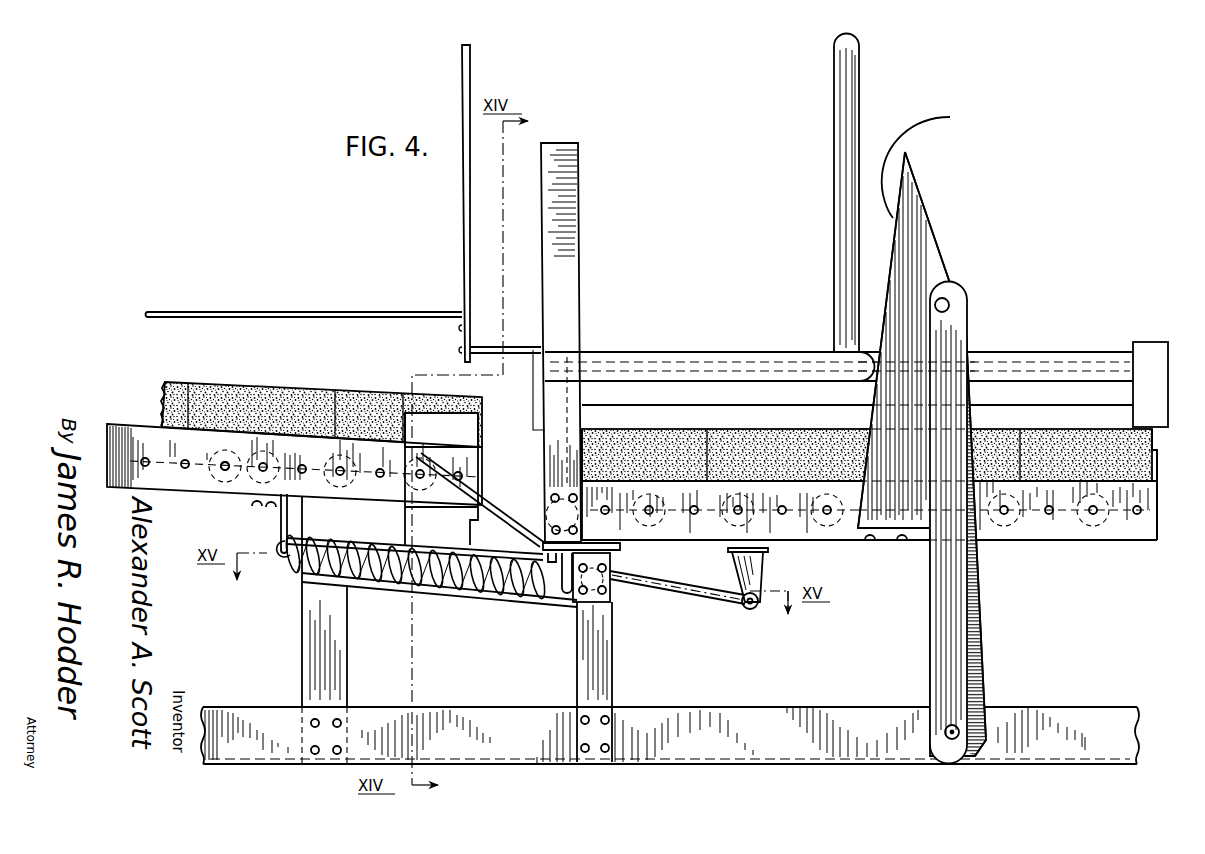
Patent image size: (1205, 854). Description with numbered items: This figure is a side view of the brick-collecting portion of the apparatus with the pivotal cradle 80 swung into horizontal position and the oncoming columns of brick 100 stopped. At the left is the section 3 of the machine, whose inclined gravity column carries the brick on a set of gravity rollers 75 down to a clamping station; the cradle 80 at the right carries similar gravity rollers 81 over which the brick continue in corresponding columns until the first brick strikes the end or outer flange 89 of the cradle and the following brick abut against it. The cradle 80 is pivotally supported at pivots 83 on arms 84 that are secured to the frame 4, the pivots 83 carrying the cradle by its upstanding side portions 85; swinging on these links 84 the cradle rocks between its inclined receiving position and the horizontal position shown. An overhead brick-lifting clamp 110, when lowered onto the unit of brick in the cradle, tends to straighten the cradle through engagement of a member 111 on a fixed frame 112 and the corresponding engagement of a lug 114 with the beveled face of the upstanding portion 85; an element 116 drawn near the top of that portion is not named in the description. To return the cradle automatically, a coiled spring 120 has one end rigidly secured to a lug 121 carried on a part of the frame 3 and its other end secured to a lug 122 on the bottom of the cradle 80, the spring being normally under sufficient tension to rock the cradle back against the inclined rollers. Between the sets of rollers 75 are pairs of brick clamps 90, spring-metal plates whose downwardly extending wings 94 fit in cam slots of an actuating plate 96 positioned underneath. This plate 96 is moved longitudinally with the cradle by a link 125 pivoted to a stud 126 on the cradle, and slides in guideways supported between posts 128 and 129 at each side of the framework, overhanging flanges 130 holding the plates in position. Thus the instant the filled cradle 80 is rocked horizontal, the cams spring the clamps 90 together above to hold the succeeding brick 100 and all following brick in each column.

The section 3 is at (237, 486).
The frame 4 is at (1027, 713).
The gravity rollers 75 is at (223, 484).
The pivoted cradle 80 is at (845, 546).
The gravity rollers 81 is at (1093, 542).
The pivots 83 is at (950, 304).
The arms 84 is at (945, 607).
The upstanding side portions 85 is at (927, 248).
The end or outer flange 89 is at (1157, 498).
The brick clamps 90 is at (450, 437).
The downwardly extending wings 94 is at (448, 538).
The actuating plate 96 is at (521, 549).
The brick 100 is at (373, 395).
The overhead clamp 110 is at (1067, 390).
The member 111 is at (488, 347).
The fixed frame 112 is at (462, 232).
The lug 114 is at (862, 373).
The spring hook 116 is at (1003, 128).
The coiled springs 120 is at (452, 583).
The lug 121 is at (283, 546).
The lug 122 is at (611, 567).
The link 125 is at (665, 598).
The stud 126 is at (752, 573).
The post 128 is at (593, 677).
The post 129 is at (312, 645).
The overhanging flanges 130 is at (508, 592).